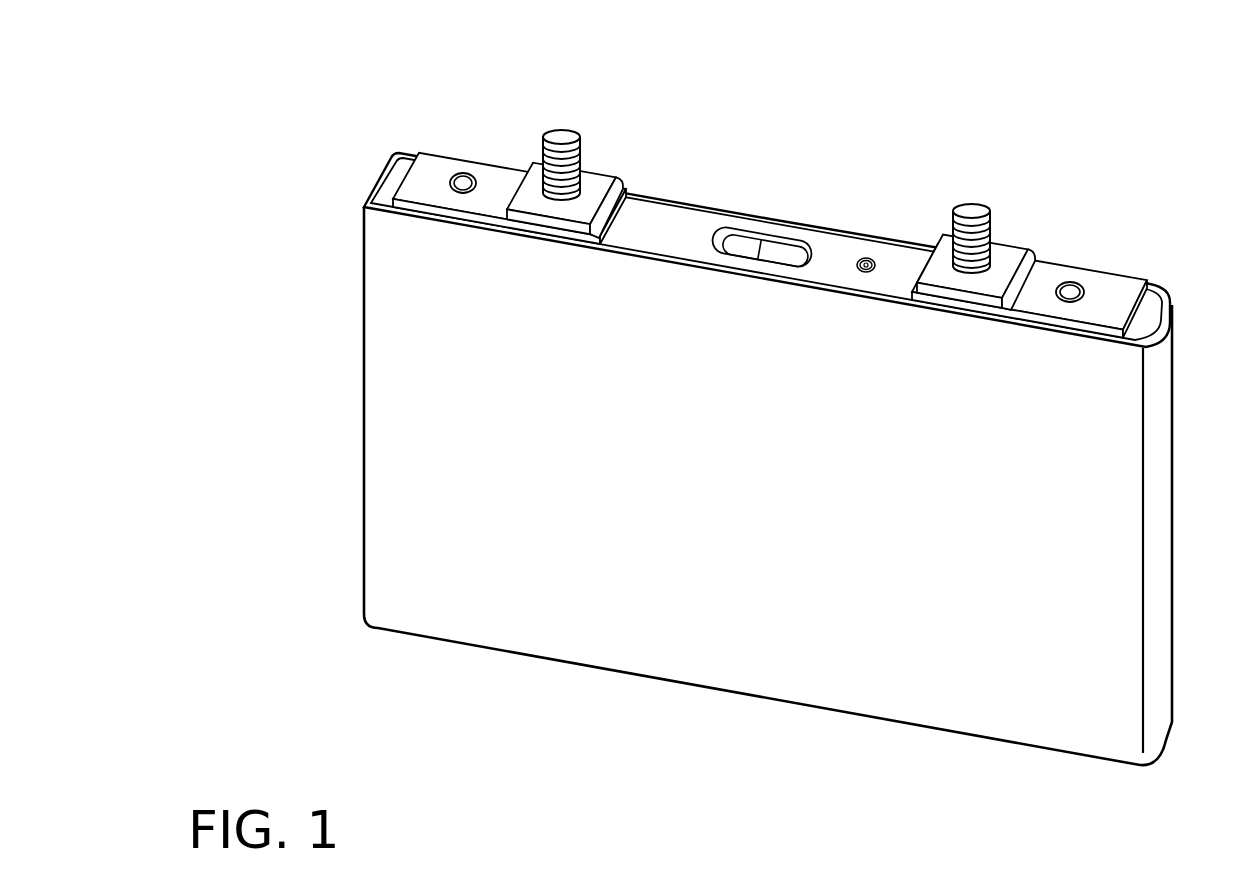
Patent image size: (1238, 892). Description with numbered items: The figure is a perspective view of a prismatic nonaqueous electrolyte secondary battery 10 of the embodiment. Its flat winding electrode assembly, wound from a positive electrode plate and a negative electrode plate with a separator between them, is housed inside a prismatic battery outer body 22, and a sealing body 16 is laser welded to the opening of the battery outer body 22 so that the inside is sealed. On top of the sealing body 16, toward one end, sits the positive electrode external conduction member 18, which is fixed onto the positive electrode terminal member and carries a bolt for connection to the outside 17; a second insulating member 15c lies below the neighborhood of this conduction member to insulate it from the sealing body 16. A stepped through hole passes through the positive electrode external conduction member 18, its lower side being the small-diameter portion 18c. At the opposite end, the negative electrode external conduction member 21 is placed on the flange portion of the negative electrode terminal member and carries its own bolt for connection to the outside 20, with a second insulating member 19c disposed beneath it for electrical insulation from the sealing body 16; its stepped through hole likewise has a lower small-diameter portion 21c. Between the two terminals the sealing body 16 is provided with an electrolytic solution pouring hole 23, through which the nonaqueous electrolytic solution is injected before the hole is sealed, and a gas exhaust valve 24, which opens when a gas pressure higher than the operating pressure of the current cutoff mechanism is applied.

The prismatic nonaqueous electrolyte secondary battery 10 is at (783, 419).
The second insulating member 15c is at (404, 152).
The sealing body 16 is at (667, 215).
The bolt for connection to the outside 17 is at (576, 128).
The positive electrode external conduction member 18 is at (503, 187).
The small-diameter portion 18c is at (463, 180).
The second insulating member 19c is at (1154, 284).
The bolt for connection to the outside 20 is at (975, 207).
The negative electrode external conduction member 21 is at (1037, 268).
The small-diameter portion 21c is at (1085, 277).
The battery outer body 22 is at (398, 603).
The electrolytic solution pouring hole 23 is at (866, 258).
The gas exhaust valve 24 is at (783, 247).